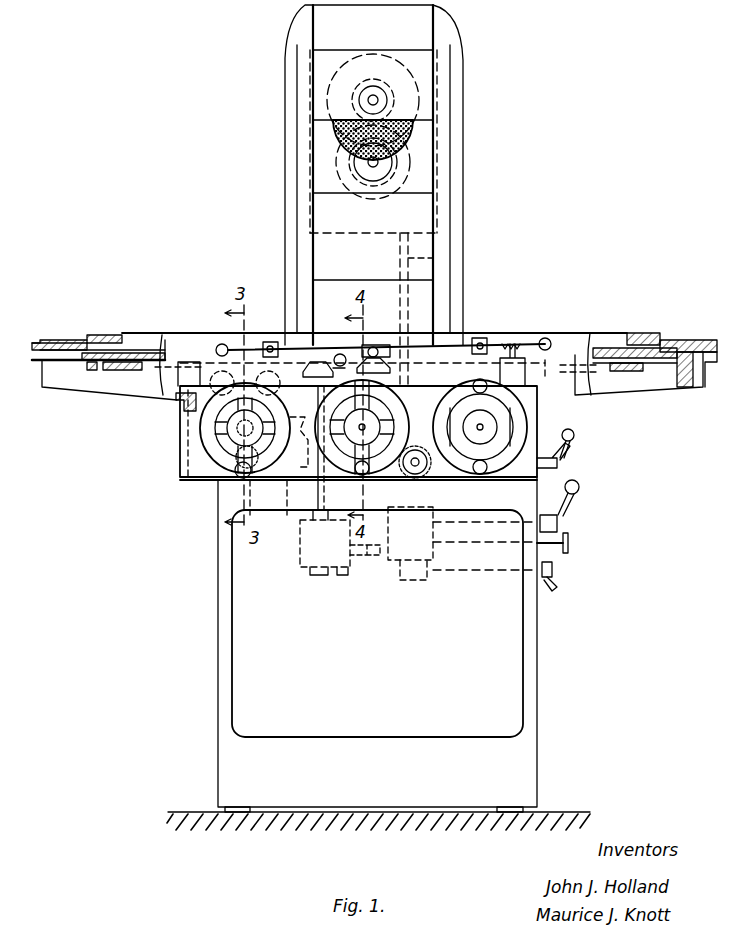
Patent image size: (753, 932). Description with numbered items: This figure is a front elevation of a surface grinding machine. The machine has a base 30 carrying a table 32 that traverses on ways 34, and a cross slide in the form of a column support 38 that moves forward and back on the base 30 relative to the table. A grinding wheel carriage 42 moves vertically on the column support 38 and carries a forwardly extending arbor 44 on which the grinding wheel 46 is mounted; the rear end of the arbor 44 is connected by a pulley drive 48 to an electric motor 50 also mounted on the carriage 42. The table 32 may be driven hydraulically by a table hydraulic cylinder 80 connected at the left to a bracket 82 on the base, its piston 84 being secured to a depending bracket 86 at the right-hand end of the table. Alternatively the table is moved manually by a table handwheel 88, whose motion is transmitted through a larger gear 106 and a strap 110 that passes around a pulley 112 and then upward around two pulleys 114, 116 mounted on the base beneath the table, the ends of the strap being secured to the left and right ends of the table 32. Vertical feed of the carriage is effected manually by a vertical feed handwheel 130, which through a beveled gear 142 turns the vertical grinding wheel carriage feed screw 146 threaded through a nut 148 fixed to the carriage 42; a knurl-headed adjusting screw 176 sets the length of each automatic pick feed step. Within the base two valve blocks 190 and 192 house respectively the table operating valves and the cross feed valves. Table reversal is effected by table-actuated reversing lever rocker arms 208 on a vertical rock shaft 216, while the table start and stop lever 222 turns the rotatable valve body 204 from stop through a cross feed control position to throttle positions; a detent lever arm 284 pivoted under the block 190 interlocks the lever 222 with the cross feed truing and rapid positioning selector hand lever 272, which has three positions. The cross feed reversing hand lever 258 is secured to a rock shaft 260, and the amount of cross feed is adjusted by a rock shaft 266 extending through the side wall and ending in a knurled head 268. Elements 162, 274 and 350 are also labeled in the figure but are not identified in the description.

The base 30 is at (538, 705).
The table 32 is at (616, 333).
The way 34 is at (562, 362).
The column support 38 is at (463, 90).
The grinding wheel carriage 42 is at (390, 48).
The arbor 44 is at (366, 96).
The grinding wheel 46 is at (410, 133).
The pulley drive 48 is at (345, 148).
The electric motor 50 is at (340, 178).
The table hydraulic cylinder 80 is at (182, 370).
The bracket 82 is at (178, 410).
The piston 84 is at (622, 380).
The depending bracket 86 is at (702, 372).
The table handwheel 88 is at (205, 447).
The gear 106 is at (212, 480).
The strap 110 is at (130, 345).
The pulley 112 is at (210, 492).
The pulley 114 is at (218, 344).
The pulley 116 is at (270, 342).
The vertical feed handwheel 130 is at (560, 450).
The beveled gear 142 is at (412, 478).
The vertical grinding wheel carriage feed screw 146 is at (432, 258).
The nut 148 is at (420, 213).
The handwheel 162 is at (392, 428).
The knurl-headed adjusting screw 176 is at (510, 343).
The valve block 190 is at (302, 565).
The valve block 192 is at (418, 550).
The rotatable valve body 204 is at (308, 512).
The reversing lever rocker arms 208 is at (373, 345).
The rock shaft 216 is at (388, 540).
The table start and stop lever 222 is at (322, 362).
The cross feed reversing hand lever 258 is at (579, 493).
The rock shaft 260 is at (498, 522).
The rock shaft 266 is at (466, 575).
The knurled head 268 is at (570, 545).
The hand lever 272 is at (559, 580).
The shaft 274 is at (505, 595).
The detent lever arm 284 is at (360, 578).
The stop pin 350 is at (567, 429).